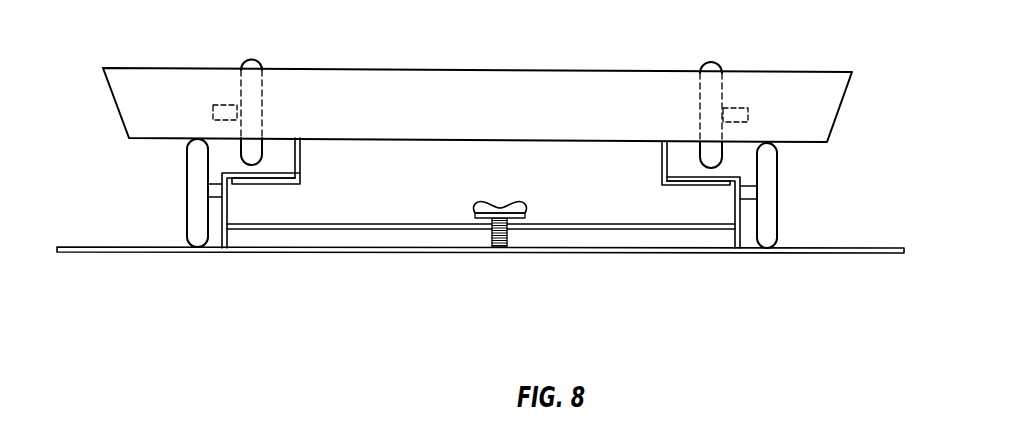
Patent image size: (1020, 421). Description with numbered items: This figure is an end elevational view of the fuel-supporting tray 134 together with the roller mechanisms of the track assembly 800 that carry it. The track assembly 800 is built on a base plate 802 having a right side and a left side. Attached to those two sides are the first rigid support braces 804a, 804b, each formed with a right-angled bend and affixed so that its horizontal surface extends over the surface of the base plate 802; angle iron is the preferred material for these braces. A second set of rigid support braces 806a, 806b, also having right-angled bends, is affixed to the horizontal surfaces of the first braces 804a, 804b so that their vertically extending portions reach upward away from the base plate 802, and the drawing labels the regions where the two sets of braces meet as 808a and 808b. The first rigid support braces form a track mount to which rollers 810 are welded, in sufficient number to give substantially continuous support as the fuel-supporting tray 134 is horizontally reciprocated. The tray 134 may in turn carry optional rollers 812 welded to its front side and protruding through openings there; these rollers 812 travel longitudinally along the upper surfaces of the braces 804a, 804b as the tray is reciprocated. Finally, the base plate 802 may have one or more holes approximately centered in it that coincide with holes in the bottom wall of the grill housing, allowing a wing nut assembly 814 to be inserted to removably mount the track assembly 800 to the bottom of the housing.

The fuel-supporting tray 134 is at (512, 105).
The track assembly 800 is at (290, 285).
The base plate 802 is at (481, 256).
The rigid support brace 804a is at (272, 210).
The rigid support brace 804b is at (689, 212).
The second rigid support brace 806a is at (312, 161).
The second rigid support brace 806b is at (648, 162).
The joint 808a is at (297, 139).
The joint 808b is at (666, 141).
The roller 810 is at (162, 193).
The roller 812 is at (481, 91).
The wing nut assembly 814 is at (528, 244).